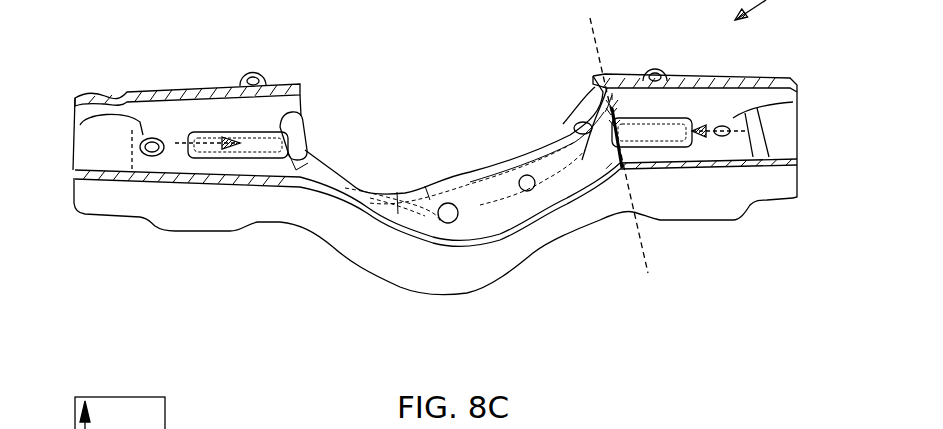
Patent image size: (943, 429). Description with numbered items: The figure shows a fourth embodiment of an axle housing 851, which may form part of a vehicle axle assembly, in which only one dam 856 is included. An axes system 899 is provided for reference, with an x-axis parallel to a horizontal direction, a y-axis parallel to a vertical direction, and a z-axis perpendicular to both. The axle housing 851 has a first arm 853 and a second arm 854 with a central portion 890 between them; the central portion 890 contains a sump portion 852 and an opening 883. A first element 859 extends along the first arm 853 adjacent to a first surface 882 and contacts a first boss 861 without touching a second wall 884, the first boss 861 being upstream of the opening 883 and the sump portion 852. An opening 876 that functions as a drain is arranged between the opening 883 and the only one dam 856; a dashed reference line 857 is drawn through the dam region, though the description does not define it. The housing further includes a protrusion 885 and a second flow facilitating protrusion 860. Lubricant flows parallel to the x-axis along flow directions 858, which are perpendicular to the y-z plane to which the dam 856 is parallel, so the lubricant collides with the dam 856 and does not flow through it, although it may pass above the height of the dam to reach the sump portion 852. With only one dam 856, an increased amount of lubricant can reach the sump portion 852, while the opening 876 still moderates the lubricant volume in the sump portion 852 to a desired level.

The axle housing 851 is at (78, 97).
The sump portion 852 is at (466, 235).
The first arm 853 is at (80, 147).
The second arm 854 is at (798, 134).
The dam 856 is at (580, 121).
The fastener 857 is at (588, 37).
The flow directions 858 is at (176, 145).
The first element 859 is at (237, 140).
The second flow facilitating protrusion 860 is at (668, 120).
The first boss 861 is at (294, 123).
The opening 876 is at (574, 127).
The first surface 882 is at (285, 84).
The opening 883 is at (428, 130).
The second wall 884 is at (277, 223).
The protrusion 885 is at (377, 277).
The central portion 890 is at (565, 256).
The axes system 899 is at (167, 418).